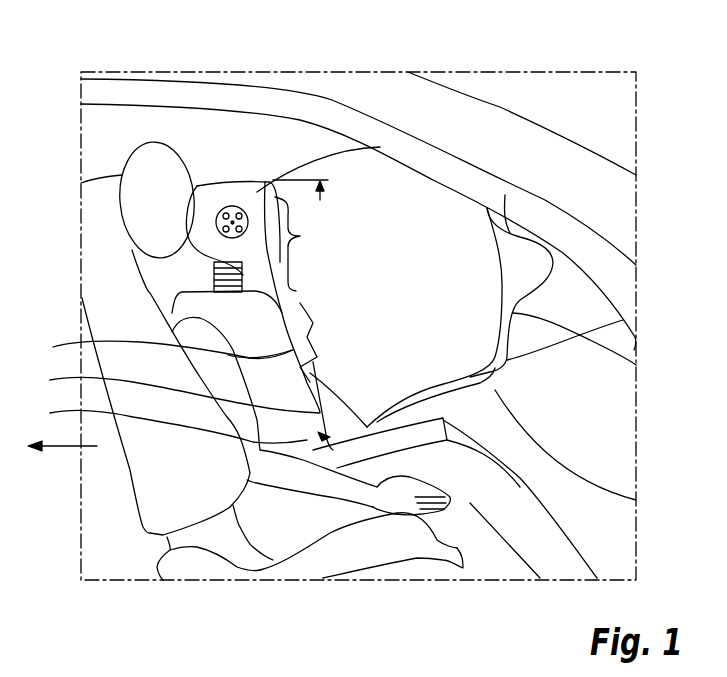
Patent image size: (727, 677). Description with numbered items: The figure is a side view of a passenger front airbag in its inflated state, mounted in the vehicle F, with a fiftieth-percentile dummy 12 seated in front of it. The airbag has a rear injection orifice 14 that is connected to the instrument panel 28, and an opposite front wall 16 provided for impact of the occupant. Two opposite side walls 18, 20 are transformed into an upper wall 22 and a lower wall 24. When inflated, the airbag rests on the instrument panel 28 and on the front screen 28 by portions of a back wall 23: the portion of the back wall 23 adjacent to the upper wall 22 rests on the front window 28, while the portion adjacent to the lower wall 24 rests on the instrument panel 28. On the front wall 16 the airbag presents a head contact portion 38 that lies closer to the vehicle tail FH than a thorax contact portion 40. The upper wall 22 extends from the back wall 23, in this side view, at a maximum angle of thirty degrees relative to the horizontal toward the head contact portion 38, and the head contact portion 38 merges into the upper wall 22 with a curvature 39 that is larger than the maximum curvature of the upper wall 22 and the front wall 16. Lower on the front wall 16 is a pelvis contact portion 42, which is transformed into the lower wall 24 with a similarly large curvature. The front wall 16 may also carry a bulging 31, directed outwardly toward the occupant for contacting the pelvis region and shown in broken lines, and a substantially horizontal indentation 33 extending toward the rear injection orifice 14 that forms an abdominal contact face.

The vehicle F is at (181, 88).
The vehicle tail FH is at (60, 452).
The 50 percent dummy 12 is at (187, 308).
The rear injection orifice 14 is at (505, 195).
The front wall 16 is at (160, 351).
The side wall 18 is at (458, 310).
The side wall 20 is at (434, 317).
The upper wall 22 is at (303, 150).
The back wall 23 is at (420, 163).
The lower wall 24 is at (427, 403).
The instrument panel 28 is at (388, 169).
The bulging 31 is at (166, 421).
The indentation 33 is at (171, 390).
The head contact portion 38 is at (306, 244).
The curvature 39 is at (258, 170).
The thorax contact portion 40 is at (327, 342).
The pelvis contact portion 42 is at (313, 362).